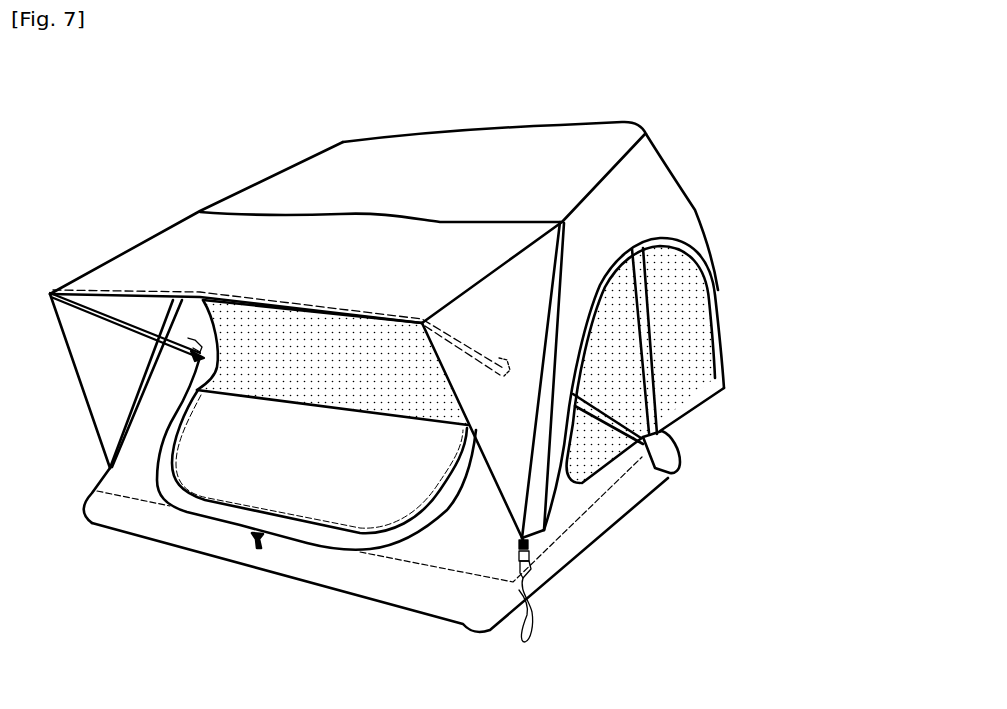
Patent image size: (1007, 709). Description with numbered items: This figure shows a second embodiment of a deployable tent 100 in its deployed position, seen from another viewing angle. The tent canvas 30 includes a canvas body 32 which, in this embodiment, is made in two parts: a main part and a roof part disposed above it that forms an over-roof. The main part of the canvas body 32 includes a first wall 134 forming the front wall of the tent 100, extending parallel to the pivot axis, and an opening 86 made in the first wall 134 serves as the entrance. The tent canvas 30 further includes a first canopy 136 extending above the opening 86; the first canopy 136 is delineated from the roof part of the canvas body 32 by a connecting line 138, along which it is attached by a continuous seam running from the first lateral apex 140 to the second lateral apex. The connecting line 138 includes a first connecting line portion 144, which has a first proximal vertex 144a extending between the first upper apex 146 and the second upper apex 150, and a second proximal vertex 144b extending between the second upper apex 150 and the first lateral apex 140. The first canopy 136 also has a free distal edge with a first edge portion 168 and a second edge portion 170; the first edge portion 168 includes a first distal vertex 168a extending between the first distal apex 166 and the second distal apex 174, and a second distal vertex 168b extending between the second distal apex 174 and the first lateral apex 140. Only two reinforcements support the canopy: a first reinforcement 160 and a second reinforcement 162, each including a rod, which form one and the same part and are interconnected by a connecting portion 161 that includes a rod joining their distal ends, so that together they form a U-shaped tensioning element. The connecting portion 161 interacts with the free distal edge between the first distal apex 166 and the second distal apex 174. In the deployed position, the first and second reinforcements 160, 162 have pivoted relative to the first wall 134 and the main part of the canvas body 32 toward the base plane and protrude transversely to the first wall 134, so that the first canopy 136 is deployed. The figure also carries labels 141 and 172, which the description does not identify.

The deployable tent 100 is at (125, 116).
The tent canvas 30 is at (267, 172).
The canvas body 32 is at (418, 557).
The opening 86 is at (317, 363).
The first wall 134 is at (137, 510).
The first canopy 136 is at (130, 252).
The connecting line 138 is at (305, 211).
The first lateral apex 140 is at (524, 538).
The strap loop 141 is at (508, 612).
The first connecting line portion 144 is at (367, 212).
The first proximal vertex 144a is at (437, 220).
The second proximal vertex 144b is at (558, 272).
The first upper apex 146 is at (197, 210).
The second upper apex 150 is at (561, 220).
The first reinforcement 160 is at (110, 318).
The connecting portion 161 is at (295, 295).
The second reinforcement 162 is at (467, 357).
The first distal apex 166 is at (50, 290).
The first edge portion 168 is at (268, 305).
The first distal vertex 168a is at (217, 303).
The second distal vertex 168b is at (488, 490).
The second edge portion 170 is at (93, 405).
The side pole 172 is at (190, 362).
The second distal apex 174 is at (413, 330).